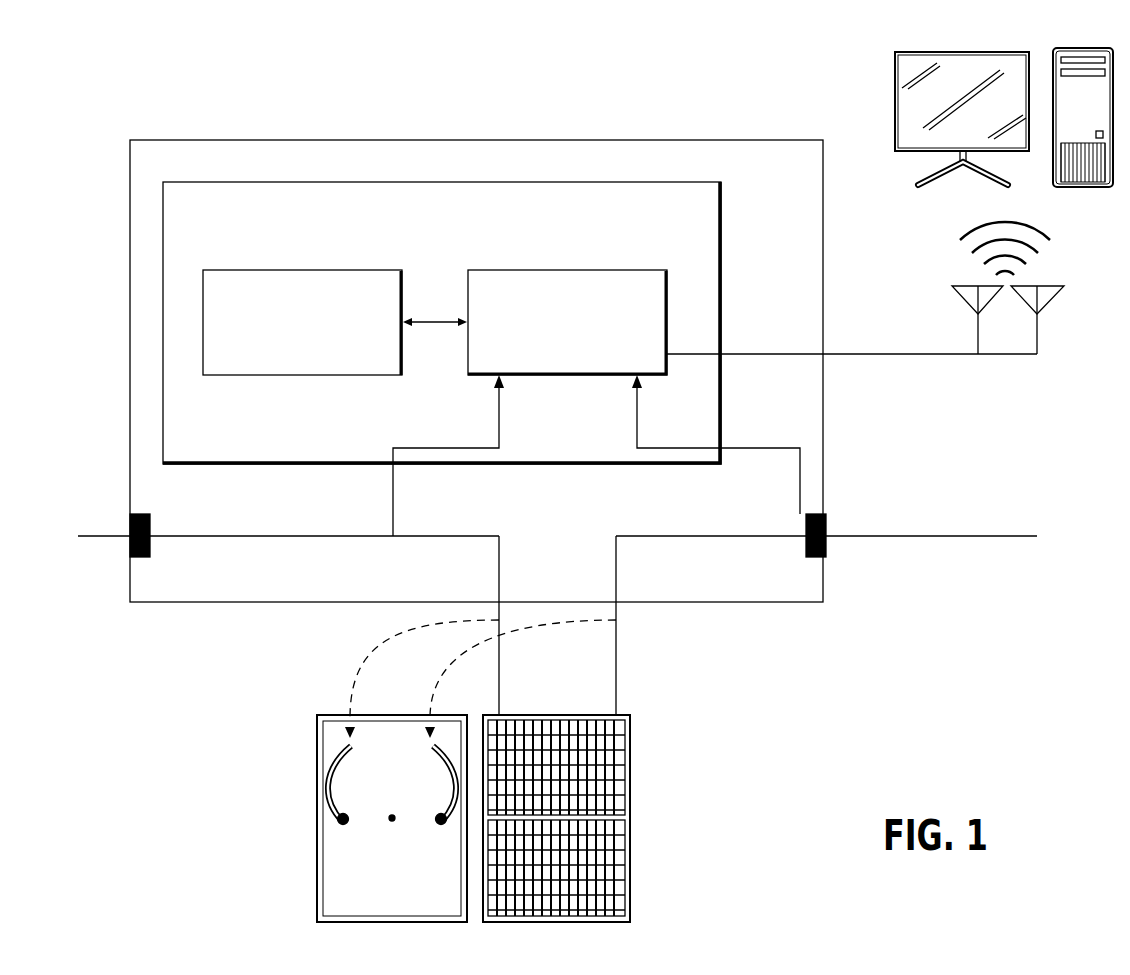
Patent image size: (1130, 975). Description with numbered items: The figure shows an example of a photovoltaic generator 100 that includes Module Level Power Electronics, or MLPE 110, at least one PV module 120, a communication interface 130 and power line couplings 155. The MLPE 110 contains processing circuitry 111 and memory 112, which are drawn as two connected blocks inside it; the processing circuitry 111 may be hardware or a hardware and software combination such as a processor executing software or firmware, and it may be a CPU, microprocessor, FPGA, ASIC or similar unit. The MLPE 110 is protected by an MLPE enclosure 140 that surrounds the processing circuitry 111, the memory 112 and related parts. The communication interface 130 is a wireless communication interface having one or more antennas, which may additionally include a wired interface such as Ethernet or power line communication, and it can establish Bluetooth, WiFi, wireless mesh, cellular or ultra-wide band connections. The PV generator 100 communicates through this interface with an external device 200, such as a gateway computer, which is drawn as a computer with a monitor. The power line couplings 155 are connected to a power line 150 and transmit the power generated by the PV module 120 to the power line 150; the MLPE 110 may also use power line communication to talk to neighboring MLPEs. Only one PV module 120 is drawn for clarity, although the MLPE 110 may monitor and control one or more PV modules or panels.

The photovoltaic (PV) generator 100 is at (558, 127).
The Module Level Power Electronics (MLPE) 110 is at (670, 212).
The processing circuitry 111 is at (567, 322).
The memory 112 is at (302, 322).
The PV module 120 is at (631, 739).
The communication interface 130 is at (960, 297).
The MLPE enclosure 140 is at (775, 175).
The power line 150 is at (948, 537).
The power line couplings 155 is at (828, 515).
The external device 200 is at (960, 36).